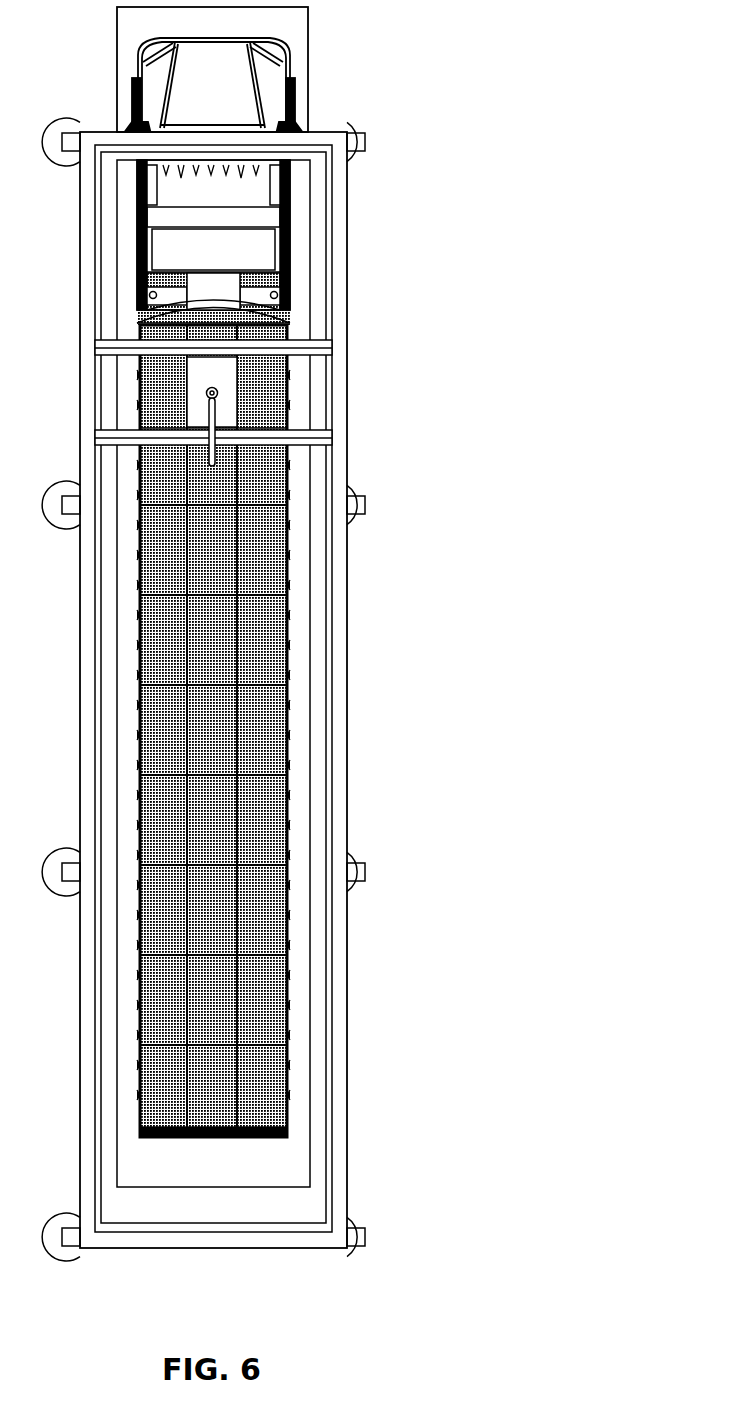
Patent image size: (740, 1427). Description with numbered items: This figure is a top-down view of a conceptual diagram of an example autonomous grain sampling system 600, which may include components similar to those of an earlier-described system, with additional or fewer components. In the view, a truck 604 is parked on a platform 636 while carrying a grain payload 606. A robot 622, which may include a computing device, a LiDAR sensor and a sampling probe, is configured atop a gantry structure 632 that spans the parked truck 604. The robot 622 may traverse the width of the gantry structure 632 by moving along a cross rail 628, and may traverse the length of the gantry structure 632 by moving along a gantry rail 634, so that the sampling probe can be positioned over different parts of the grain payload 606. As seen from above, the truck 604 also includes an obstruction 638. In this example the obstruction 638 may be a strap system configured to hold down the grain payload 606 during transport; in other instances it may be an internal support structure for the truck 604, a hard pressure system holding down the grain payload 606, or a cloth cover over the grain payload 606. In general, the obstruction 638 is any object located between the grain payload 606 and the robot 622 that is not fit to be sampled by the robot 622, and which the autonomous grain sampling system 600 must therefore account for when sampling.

The autonomous grain sampling system 600 is at (592, 46).
The truck 604 is at (287, 47).
The grain payload 606 is at (212, 637).
The robot 622 is at (228, 382).
The cross rail 628 is at (333, 341).
The gantry structure 632 is at (381, 134).
The gantry rail 634 is at (346, 257).
The platform 636 is at (118, 44).
The obstruction 638 is at (243, 680).